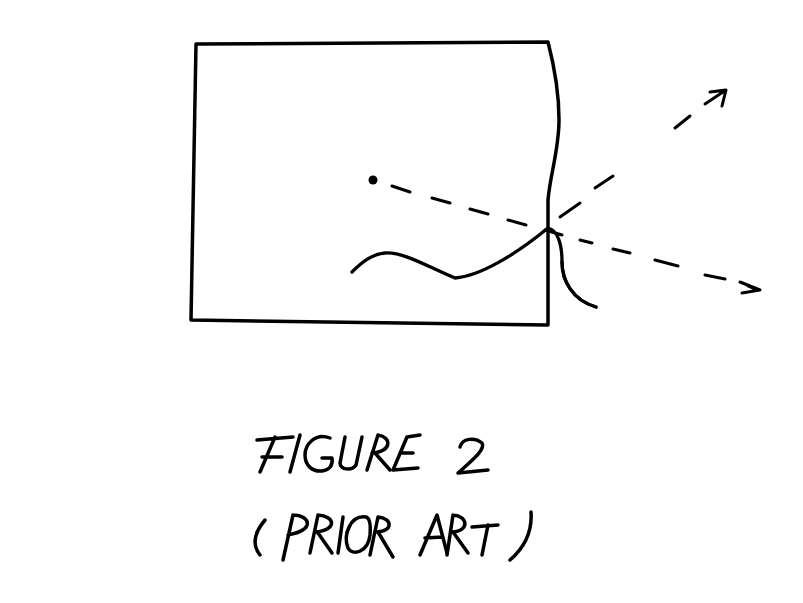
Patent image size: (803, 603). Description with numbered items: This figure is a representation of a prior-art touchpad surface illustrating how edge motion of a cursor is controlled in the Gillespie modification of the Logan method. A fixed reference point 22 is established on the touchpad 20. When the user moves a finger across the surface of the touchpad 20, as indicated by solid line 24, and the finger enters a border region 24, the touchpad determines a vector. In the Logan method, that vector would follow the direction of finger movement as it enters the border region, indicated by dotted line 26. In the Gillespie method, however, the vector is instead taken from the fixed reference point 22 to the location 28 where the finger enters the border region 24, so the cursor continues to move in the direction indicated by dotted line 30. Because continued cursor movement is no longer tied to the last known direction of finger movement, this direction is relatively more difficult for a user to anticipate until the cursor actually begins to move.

The touchpad 20 is at (220, 153).
The fixed reference point 22 is at (373, 180).
The border region 24 is at (382, 251).
The dotted line 26 is at (637, 160).
The location 28 is at (606, 297).
The dotted line 30 is at (665, 262).